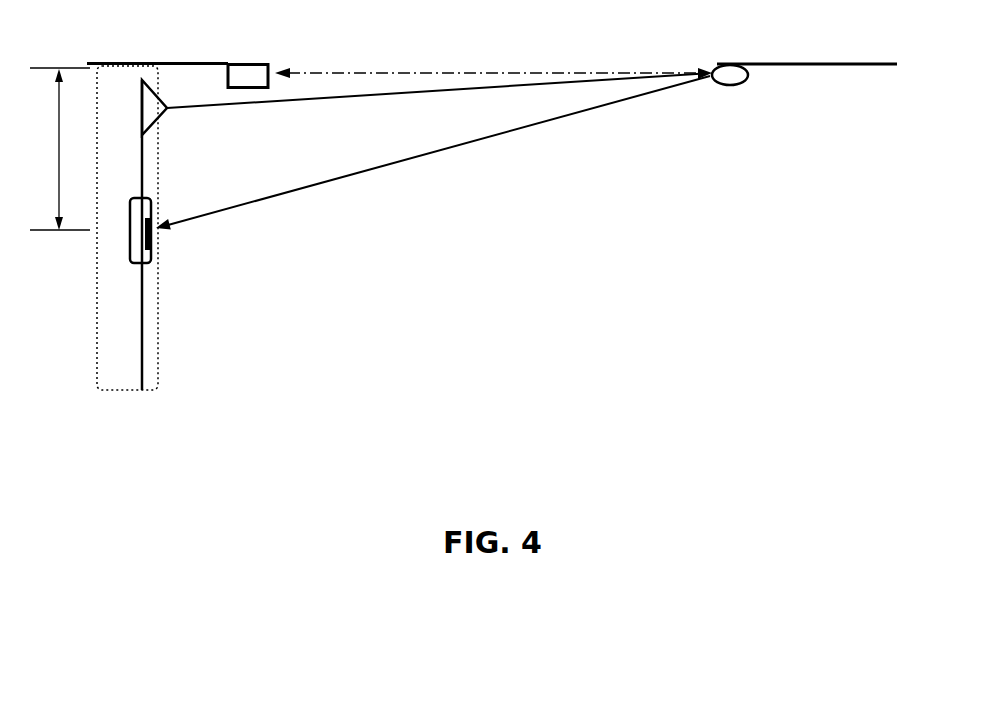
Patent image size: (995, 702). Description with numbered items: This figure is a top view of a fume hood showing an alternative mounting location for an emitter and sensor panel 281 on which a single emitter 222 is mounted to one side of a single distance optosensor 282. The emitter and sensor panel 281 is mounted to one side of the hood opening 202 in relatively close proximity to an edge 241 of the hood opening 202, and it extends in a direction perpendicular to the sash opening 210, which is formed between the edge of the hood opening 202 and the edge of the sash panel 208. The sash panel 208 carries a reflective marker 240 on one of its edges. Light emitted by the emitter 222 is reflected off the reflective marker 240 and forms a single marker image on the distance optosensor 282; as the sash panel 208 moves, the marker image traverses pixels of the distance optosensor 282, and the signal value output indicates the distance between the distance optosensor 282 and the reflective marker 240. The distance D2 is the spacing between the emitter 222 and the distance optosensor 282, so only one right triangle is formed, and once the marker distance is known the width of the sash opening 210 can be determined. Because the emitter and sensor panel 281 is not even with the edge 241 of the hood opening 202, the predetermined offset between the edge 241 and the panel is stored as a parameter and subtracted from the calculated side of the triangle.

The hood opening 202 is at (277, 67).
The sash panel 208 is at (808, 63).
The sash opening 210 is at (645, 60).
The emitter 222 is at (166, 111).
The reflective marker 240 is at (713, 84).
The edge of the hood opening 241 is at (246, 75).
The emitter and sensor panel 281 is at (122, 393).
The distance optosensor 282 is at (143, 265).
The distance between the light emitter and the distance optosensor D2 is at (60, 149).